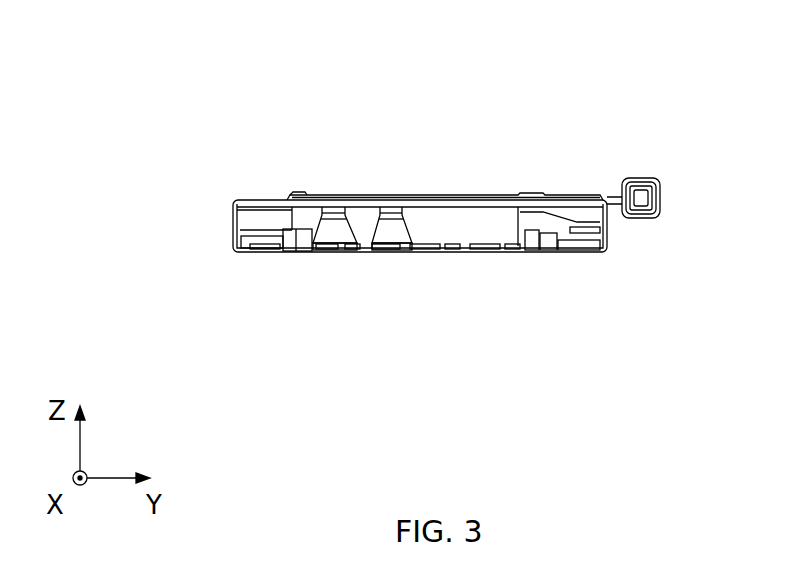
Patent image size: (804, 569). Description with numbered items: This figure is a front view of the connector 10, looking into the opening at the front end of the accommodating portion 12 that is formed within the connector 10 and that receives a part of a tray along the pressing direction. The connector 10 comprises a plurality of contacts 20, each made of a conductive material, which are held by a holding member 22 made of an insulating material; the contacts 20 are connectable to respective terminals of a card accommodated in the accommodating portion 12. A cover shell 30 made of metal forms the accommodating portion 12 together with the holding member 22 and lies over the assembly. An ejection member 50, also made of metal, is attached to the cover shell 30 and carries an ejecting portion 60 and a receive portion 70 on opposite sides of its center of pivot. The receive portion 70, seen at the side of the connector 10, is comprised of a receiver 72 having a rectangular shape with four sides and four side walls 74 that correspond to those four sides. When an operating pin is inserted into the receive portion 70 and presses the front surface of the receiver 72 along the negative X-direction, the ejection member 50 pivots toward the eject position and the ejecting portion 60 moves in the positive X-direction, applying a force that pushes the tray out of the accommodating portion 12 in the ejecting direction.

The connector 10 is at (524, 112).
The cover shell 30 is at (246, 200).
The ejecting portion 60 is at (368, 200).
The ejection member 50 is at (425, 200).
The accommodating portion 12 is at (485, 222).
The holding member 22 is at (304, 247).
The contacts 20 is at (326, 248).
The receive portion 70 is at (663, 182).
The side walls 74 is at (640, 178).
The receiver 72 is at (638, 206).